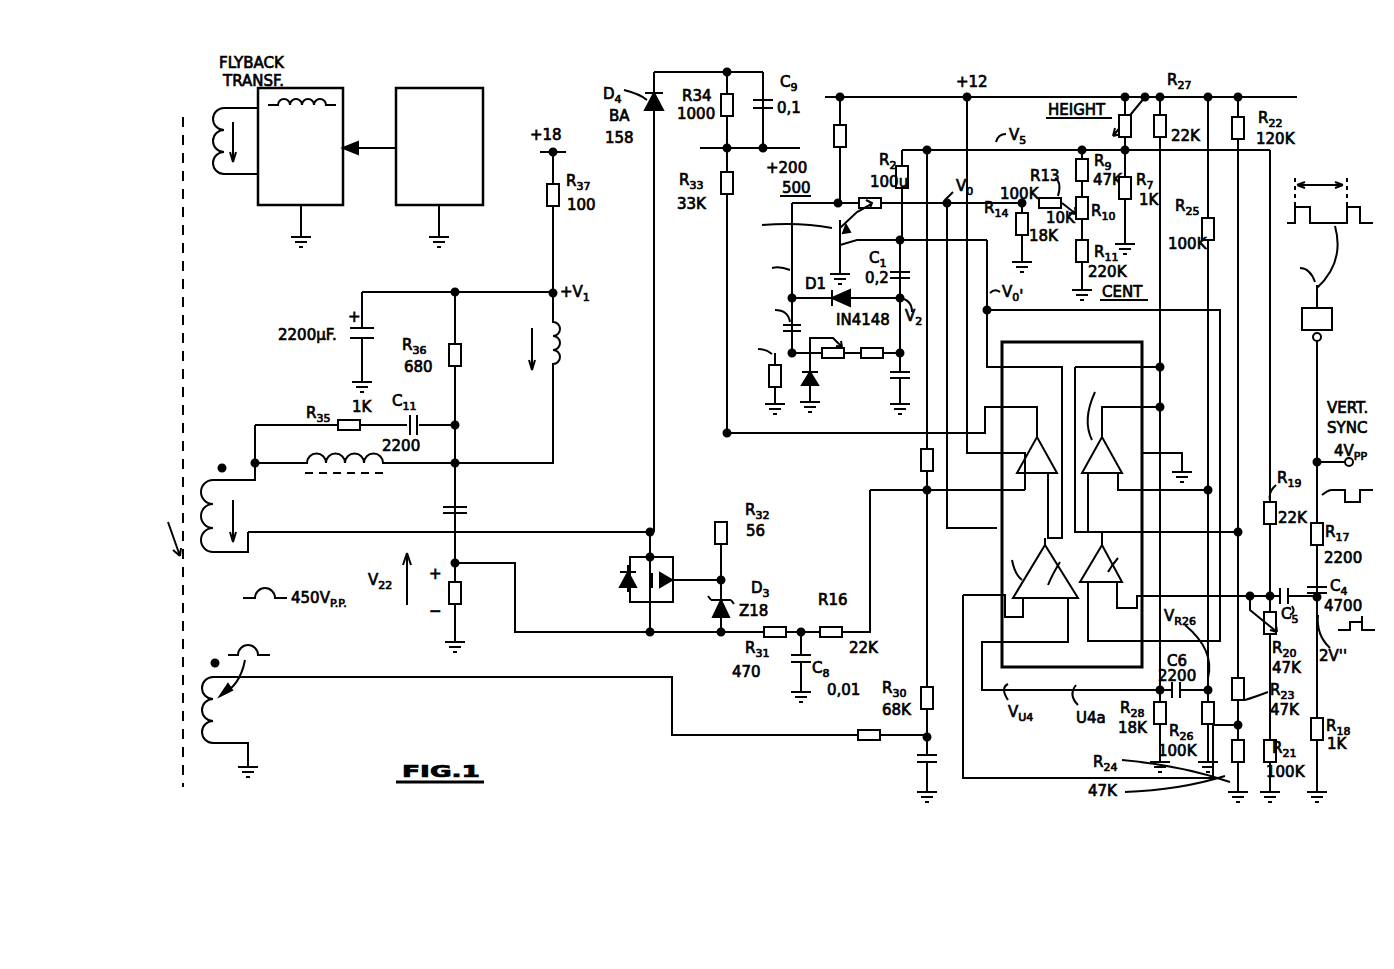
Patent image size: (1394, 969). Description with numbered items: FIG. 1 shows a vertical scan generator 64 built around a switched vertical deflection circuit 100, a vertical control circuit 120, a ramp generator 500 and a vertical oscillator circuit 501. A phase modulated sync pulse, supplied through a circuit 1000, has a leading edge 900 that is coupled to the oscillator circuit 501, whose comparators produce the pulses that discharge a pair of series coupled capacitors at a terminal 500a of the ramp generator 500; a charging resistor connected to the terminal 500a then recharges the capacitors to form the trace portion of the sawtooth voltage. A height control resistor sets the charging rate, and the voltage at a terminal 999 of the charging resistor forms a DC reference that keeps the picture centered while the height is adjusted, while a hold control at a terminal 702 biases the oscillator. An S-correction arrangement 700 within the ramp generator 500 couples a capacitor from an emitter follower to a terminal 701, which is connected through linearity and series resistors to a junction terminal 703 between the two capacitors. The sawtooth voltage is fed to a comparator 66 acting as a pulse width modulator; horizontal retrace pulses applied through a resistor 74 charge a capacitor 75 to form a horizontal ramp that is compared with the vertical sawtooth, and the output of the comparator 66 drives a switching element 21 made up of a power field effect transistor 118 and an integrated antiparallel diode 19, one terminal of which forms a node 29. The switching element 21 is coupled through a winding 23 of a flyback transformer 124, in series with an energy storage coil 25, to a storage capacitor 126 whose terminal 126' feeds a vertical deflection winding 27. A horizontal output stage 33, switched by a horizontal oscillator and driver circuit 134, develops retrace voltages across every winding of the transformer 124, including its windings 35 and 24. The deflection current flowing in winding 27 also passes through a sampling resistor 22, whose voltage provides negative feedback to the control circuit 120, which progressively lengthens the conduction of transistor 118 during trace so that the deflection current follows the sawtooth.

The flyback transformer 124 is at (196, 106).
The horizontal output stage 33 is at (343, 88).
The horizontal oscillator and driver circuit 134 is at (467, 88).
The flyback transformer primary winding 35 is at (222, 166).
The vertical deflection winding 27 is at (561, 318).
The energy storage coil 25 is at (332, 458).
The winding 23 is at (228, 512).
The flyback transformer auxiliary winding 24 is at (222, 729).
The storage capacitor 126 is at (442, 513).
The terminal 126' is at (503, 455).
The deflection current sampling resistor 22 is at (460, 580).
The switching element 21 is at (657, 560).
The integrated antiparallel diode 19 is at (624, 586).
The transistor 118 is at (673, 596).
The circuit node 29 is at (723, 638).
The vertical scan generator 64 is at (623, 753).
The resistor 74 is at (865, 742).
The capacitor 75 is at (928, 752).
The switched vertical deflection circuit 100 is at (594, 496).
The vertical control circuit 120 is at (979, 522).
The ramp generator 500 is at (836, 241).
The terminal 500a is at (920, 150).
The vertical oscillator circuit 501 is at (1061, 664).
The S-correction arrangement 700 is at (785, 424).
The terminal 701 is at (770, 334).
The hold control node 702 is at (1256, 580).
The junction terminal 703 is at (904, 356).
The leading edge 900 is at (1362, 224).
The terminal 999 is at (1104, 148).
The vertical sync source 1000 is at (1325, 283).
The comparator 66 is at (1040, 435).